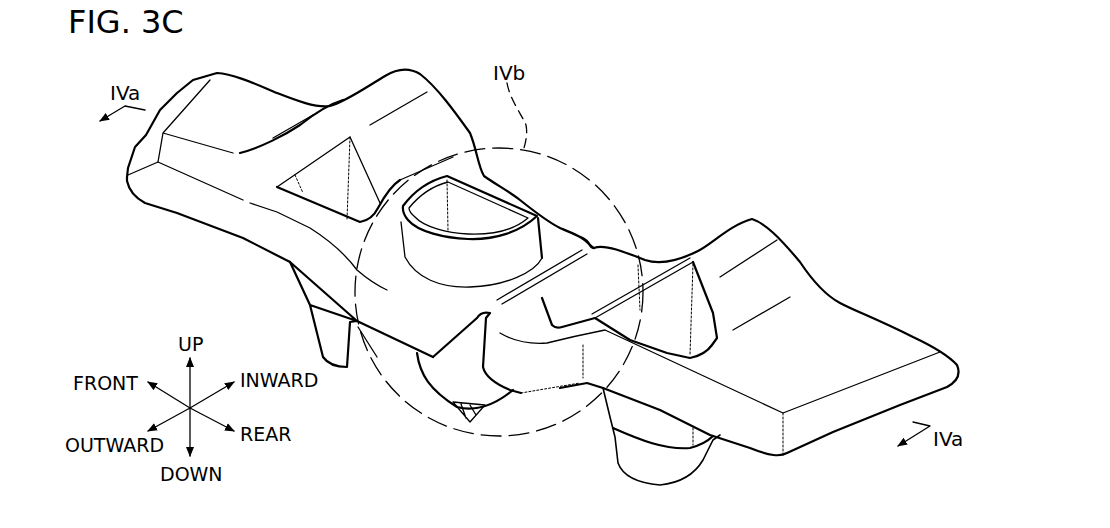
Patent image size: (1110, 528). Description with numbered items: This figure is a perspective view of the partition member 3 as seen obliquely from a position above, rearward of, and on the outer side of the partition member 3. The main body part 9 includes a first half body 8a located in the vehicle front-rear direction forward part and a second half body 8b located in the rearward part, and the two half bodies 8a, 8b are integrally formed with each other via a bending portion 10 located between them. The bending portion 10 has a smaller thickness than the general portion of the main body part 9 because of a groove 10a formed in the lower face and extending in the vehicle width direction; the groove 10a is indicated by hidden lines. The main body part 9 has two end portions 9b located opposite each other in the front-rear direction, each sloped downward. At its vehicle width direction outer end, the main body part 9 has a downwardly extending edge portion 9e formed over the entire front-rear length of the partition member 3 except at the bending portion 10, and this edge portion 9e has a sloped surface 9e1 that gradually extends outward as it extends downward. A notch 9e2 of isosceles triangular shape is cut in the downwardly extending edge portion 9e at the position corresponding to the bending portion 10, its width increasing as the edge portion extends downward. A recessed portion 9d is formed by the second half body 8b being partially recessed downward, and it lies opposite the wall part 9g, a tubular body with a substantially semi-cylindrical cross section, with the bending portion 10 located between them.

The partition member 3 is at (686, 171).
The first half body 8a is at (253, 113).
The second half body 8b is at (818, 345).
The main body part 9 is at (903, 325).
The end portion 9b is at (153, 132).
The recessed portion 9d is at (633, 254).
The downwardly extending edge portion 9e is at (208, 206).
The sloped surface 9e1 is at (292, 263).
The notch 9e2 is at (461, 351).
The wall part 9g is at (430, 260).
The bending portion 10 is at (580, 296).
The groove 10a is at (542, 277).